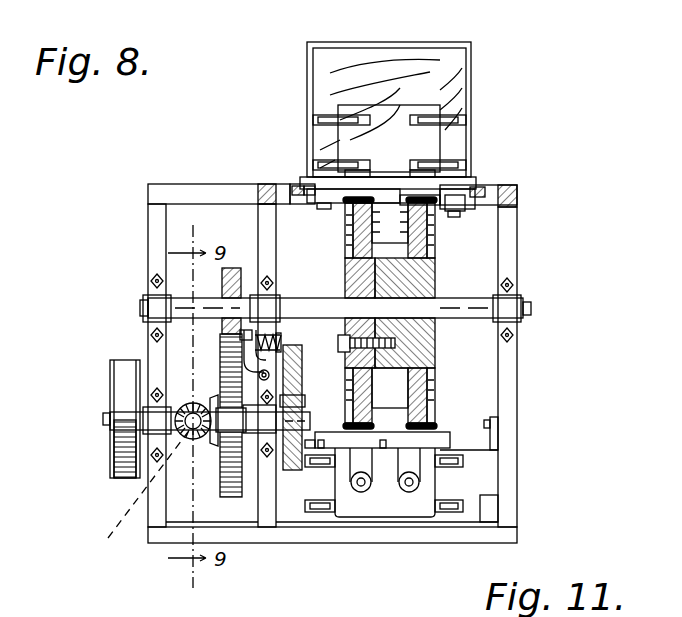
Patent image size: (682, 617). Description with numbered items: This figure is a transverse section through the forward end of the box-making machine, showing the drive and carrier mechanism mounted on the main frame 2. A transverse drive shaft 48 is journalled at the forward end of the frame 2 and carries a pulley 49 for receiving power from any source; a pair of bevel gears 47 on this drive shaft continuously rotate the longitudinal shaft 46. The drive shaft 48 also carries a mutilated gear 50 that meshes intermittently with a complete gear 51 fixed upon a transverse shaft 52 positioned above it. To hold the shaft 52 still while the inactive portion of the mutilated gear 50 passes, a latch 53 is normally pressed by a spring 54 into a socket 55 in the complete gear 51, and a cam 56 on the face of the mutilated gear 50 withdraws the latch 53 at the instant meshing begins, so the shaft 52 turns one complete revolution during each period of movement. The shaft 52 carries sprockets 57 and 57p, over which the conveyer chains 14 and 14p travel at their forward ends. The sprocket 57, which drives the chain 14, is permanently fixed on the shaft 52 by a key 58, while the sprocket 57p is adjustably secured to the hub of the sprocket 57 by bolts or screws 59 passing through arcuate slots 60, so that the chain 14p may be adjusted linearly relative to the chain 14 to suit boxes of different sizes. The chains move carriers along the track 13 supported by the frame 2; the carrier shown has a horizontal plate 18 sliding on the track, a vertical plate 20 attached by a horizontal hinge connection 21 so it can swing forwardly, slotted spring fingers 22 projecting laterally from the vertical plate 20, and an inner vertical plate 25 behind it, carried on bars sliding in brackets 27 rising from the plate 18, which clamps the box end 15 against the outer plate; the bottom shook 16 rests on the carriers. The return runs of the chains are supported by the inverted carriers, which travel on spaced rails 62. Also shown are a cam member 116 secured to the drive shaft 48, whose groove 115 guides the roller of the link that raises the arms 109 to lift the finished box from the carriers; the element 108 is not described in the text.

The main frame 2 is at (505, 428).
The track 13 is at (478, 228).
The conveyer chain 14 is at (452, 196).
The conveyer chain 14p is at (345, 205).
The end shook 15 is at (450, 78).
The bottom shook 16 is at (385, 62).
The horizontal plate 18 is at (455, 184).
The vertical plate 20 is at (389, 138).
The hinge connection 21 is at (389, 163).
The spring fingers 22 is at (470, 118).
The inner vertical plate 25 is at (385, 482).
The brackets 27 is at (413, 463).
The longitudinal shaft 46 is at (133, 494).
The bevel gears 47 is at (202, 442).
The drive shaft 48 is at (105, 420).
The pulley 49 is at (122, 448).
The mutilated gear 50 is at (232, 497).
The complete gear 51 is at (241, 295).
The transverse shaft 52 is at (531, 310).
The latch 53 is at (247, 357).
The spring 54 is at (281, 338).
The socket 55 is at (240, 336).
The cam 56 is at (242, 478).
The sprocket 57 is at (436, 242).
The sprocket 57p is at (390, 225).
The key 58 is at (435, 288).
The bolts or screws 59 is at (342, 346).
The arcuate slots 60 is at (435, 350).
The rails 62 is at (472, 450).
The bracket 108 is at (306, 184).
The arms 109 is at (296, 184).
The groove 115 is at (437, 380).
The cam member 116 is at (310, 392).